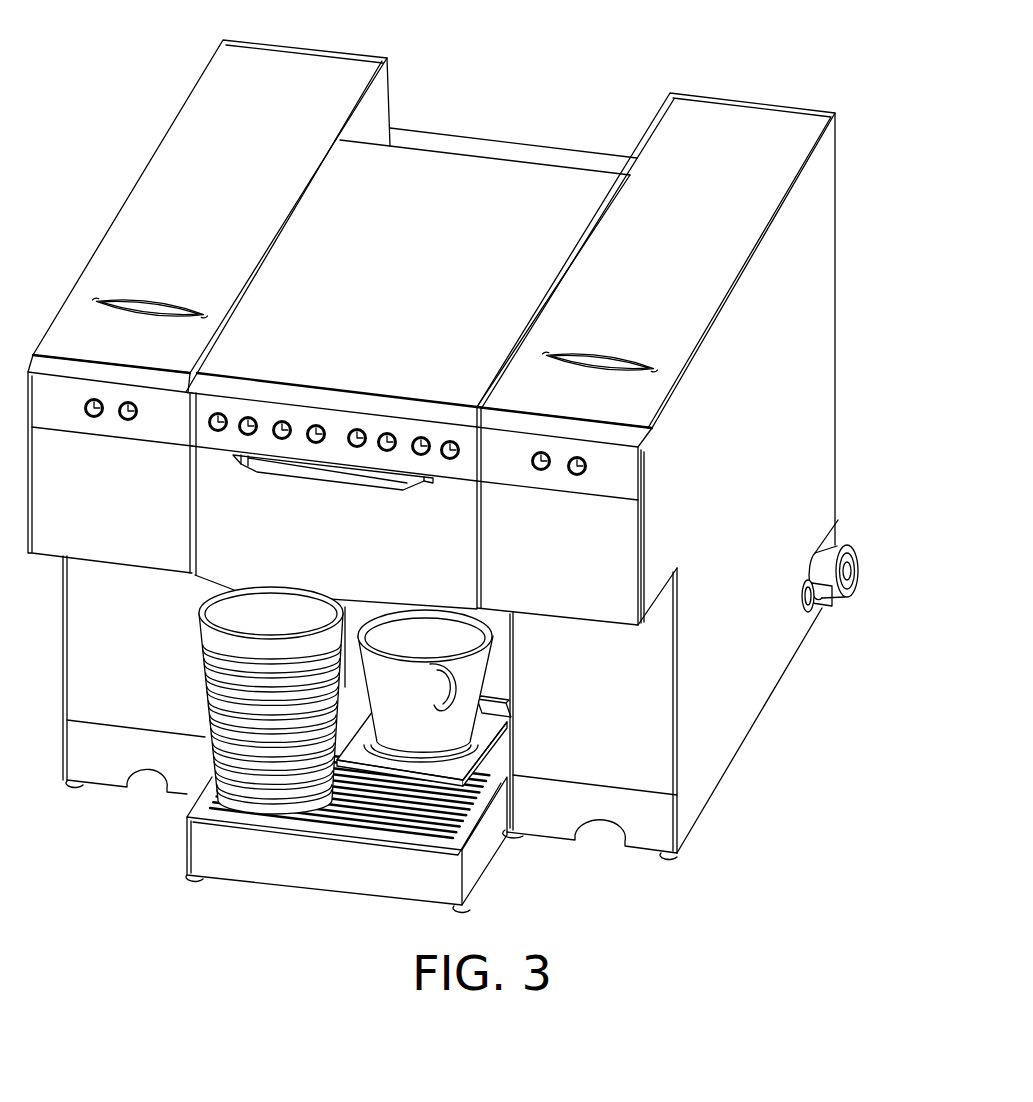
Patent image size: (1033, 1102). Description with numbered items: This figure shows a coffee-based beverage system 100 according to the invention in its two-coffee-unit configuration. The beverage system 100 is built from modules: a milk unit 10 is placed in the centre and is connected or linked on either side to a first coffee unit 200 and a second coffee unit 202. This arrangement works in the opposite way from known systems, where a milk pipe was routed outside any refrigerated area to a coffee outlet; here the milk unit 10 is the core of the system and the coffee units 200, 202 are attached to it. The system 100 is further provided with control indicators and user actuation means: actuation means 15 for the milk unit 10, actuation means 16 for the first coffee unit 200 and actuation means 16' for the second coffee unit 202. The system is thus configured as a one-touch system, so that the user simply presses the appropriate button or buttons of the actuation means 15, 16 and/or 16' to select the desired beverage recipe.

The beverage system 100 is at (838, 325).
The milk unit 10 is at (447, 163).
The coffee unit 200 is at (303, 60).
The coffee unit 202 is at (753, 113).
The user actuation means 15 is at (243, 436).
The user actuation means 16 is at (87, 436).
The user actuation means 16' is at (549, 494).